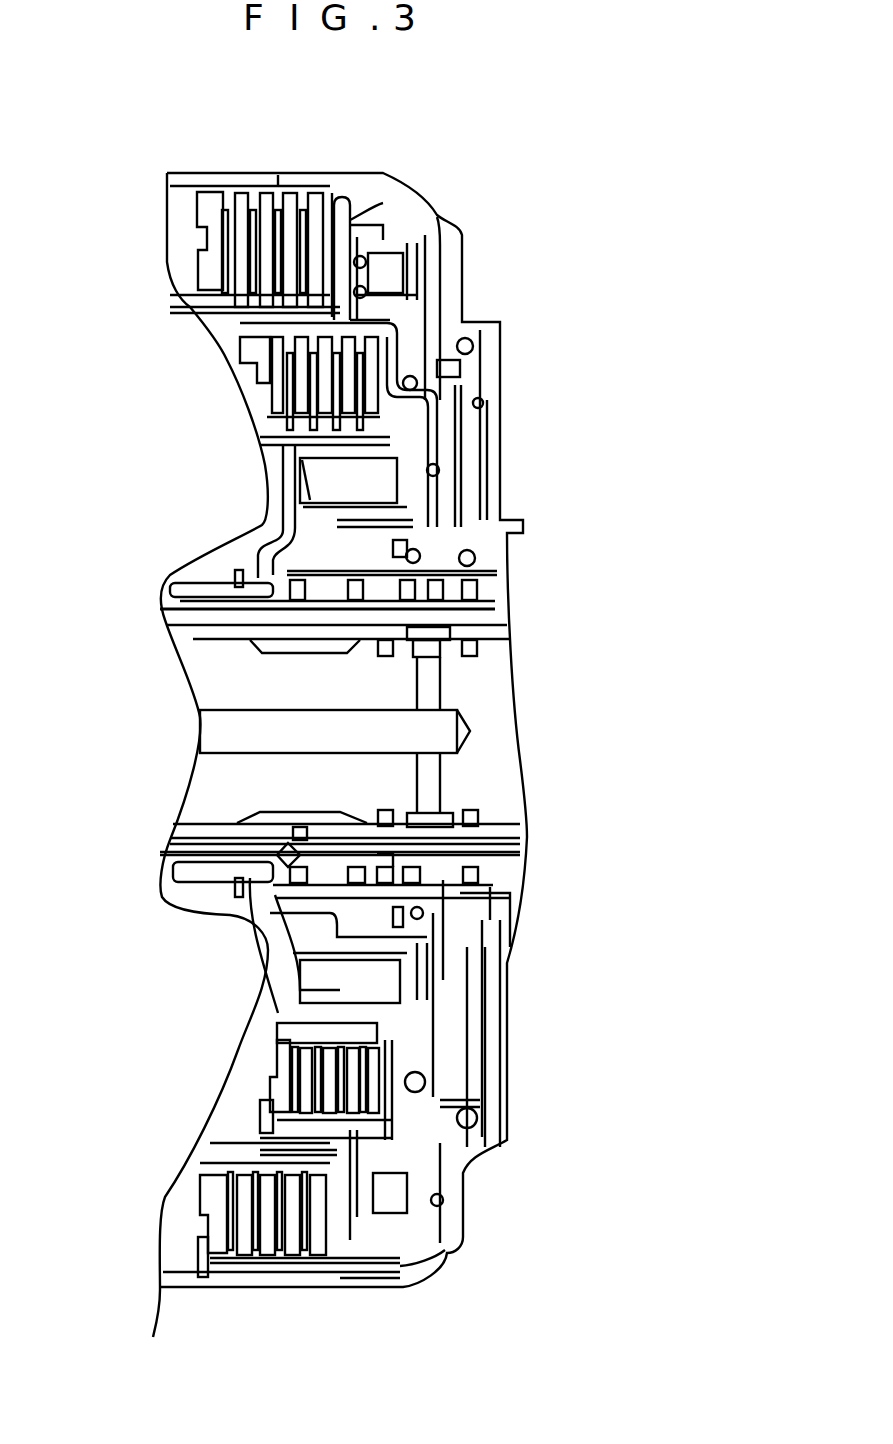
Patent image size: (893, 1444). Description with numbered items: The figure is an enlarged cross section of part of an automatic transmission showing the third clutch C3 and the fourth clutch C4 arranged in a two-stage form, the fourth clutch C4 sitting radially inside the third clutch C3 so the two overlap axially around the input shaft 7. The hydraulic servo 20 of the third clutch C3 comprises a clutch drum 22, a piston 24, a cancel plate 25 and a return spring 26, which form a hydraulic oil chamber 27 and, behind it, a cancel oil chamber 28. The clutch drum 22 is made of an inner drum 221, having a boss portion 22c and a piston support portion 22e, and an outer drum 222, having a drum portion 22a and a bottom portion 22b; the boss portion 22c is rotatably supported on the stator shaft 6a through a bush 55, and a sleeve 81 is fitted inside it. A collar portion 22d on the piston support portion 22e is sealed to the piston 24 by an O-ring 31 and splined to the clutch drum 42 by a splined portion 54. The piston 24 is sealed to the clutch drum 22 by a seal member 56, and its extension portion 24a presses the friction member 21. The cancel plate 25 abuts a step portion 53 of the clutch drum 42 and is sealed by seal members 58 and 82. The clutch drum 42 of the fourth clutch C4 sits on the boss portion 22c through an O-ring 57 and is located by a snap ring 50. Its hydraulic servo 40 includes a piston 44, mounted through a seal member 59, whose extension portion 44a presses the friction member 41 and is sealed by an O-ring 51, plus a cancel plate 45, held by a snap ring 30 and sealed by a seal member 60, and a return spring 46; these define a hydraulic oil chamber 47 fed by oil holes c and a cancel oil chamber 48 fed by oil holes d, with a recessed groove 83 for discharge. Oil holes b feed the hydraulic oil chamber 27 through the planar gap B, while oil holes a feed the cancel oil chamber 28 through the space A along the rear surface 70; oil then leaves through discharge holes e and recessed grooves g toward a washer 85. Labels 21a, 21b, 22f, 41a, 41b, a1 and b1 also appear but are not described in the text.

The input shaft 7 is at (483, 710).
The hydraulic servo 20 is at (460, 1137).
The friction member 21 is at (295, 112).
The friction plate 21a is at (215, 188).
The separator plate 21b is at (240, 188).
The clutch drum 22 is at (459, 1240).
The drum portion 22a is at (318, 185).
The bottom portion 22b is at (490, 340).
The boss portion 22c is at (330, 560).
The collar portion 22d is at (483, 333).
The piston support portion 22e is at (473, 423).
The wall portion 22f is at (247, 913).
The inner drum 221 is at (503, 913).
The outer drum 222 is at (470, 1157).
The piston 24 is at (430, 257).
The extension portion 24a is at (338, 222).
The cancel plate 25 is at (360, 205).
The return spring 26 is at (415, 243).
The hydraulic oil chamber 27 is at (447, 317).
The cancel oil chamber 28 is at (373, 1230).
The snap ring 30 is at (237, 577).
The O-ring 31 is at (470, 363).
The hydraulic servo 40 is at (470, 993).
The friction member 41 is at (122, 395).
The friction plate 41a is at (340, 398).
The separator plate 41b is at (263, 425).
The clutch drum 42 is at (463, 1080).
The piston 44 is at (437, 440).
The extension portion 44a is at (390, 1070).
The cancel plate 45 is at (290, 533).
The return spring 46 is at (297, 490).
The hydraulic oil chamber 47 is at (430, 473).
The cancel oil chamber 48 is at (310, 953).
The snap ring 50 is at (463, 533).
The O-ring 51 is at (480, 393).
The step portion 53 is at (423, 283).
The splined portion 54 is at (497, 357).
The bush 55 is at (237, 593).
The seal member 56 is at (455, 228).
The O-ring 57 is at (423, 890).
The seal member 58 is at (413, 227).
The seal member 59 is at (200, 720).
The seal member 60 is at (380, 390).
The stator shaft 6a is at (250, 613).
The rear surface 70 is at (490, 963).
The sleeve 81 is at (330, 890).
The seal member 82 is at (445, 315).
The recessed groove 83 is at (223, 885).
The washer 85 is at (483, 923).
The space A is at (430, 467).
The gap B is at (510, 390).
The third clutch C3 is at (178, 1246).
The fourth clutch C4 is at (257, 1090).
The oil holes a is at (457, 890).
The oil passage a1 is at (417, 903).
The oil holes b is at (470, 540).
The oil passage b1 is at (480, 583).
The oil holes c is at (473, 610).
The oil holes d is at (345, 550).
The discharge holes e is at (507, 937).
The recessed grooves g is at (507, 890).